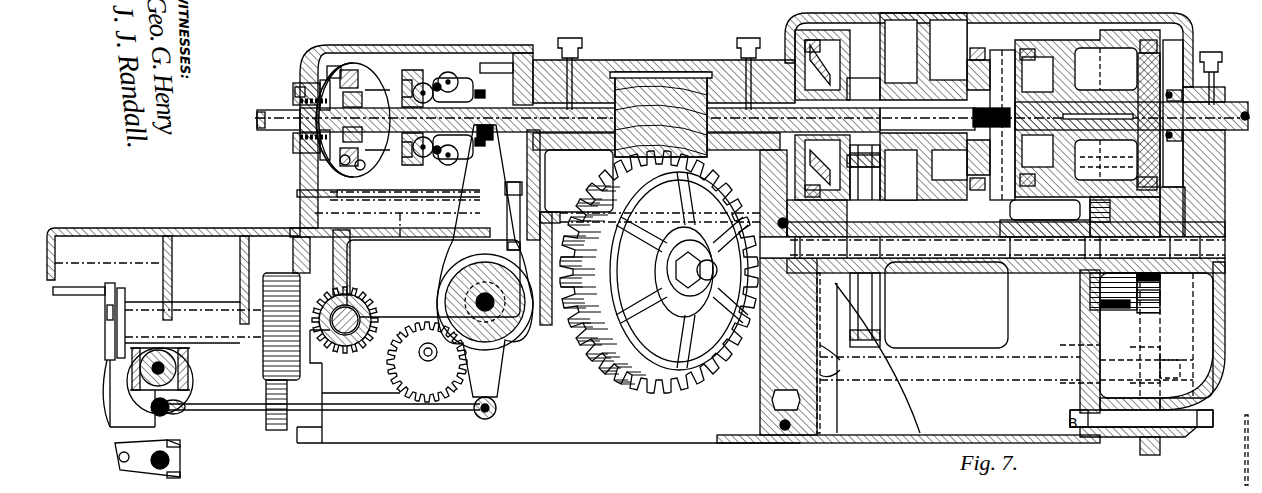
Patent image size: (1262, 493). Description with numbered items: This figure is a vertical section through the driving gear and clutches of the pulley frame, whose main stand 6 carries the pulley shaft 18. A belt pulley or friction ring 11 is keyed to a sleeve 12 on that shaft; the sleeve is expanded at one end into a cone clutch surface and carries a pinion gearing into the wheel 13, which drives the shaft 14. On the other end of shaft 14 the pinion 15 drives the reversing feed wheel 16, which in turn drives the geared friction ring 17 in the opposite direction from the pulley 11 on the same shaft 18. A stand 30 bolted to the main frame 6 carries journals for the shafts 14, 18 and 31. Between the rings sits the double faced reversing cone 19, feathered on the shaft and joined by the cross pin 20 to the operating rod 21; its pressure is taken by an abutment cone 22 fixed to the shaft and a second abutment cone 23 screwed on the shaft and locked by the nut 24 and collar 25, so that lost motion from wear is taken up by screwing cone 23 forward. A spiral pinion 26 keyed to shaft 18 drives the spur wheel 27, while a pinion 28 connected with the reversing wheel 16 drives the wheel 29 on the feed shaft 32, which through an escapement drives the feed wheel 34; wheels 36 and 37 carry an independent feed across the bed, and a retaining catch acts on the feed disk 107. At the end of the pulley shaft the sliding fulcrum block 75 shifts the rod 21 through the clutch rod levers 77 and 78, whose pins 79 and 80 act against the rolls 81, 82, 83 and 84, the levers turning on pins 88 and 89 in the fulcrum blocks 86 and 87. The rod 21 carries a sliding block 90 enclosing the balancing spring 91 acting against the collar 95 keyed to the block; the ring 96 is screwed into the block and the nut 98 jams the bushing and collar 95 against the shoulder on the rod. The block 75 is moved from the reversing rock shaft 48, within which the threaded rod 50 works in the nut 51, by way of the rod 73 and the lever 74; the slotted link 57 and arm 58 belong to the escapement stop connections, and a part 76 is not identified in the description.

The main stand of pulley frame 6 is at (546, 185).
The belt pulley 11 is at (923, 106).
The sleeve 12 is at (863, 122).
The wheel 13 is at (865, 246).
The shaft 14 is at (992, 247).
The pinion 15 is at (1080, 217).
The reversing feed wheel 16 is at (1115, 312).
The geared friction ring 17 is at (1106, 114).
The pulley shaft 18 is at (1132, 116).
The double faced reversing cone 19 is at (1036, 117).
The cross pin 20 is at (991, 113).
The operating rod 21 is at (752, 120).
The abutment cone 22 is at (822, 115).
The abutment cone 23 is at (1148, 115).
The nut 24 is at (1225, 80).
The collar 25 is at (870, 112).
The spiral pinion 26 is at (661, 114).
The spur wheel 27 is at (660, 272).
The pinion 28 is at (1160, 282).
The wheel 29 is at (1160, 297).
The stand 30 is at (1136, 335).
The shaft 31 is at (1175, 368).
The feed shaft 32 is at (948, 347).
The feed wheel 34 is at (262, 325).
The wheel 36 is at (345, 297).
The wheel 37 is at (427, 362).
The reversing rock shaft 48 is at (215, 355).
The rod 50 is at (158, 350).
The nut 51 is at (168, 401).
The slotted link 57 is at (122, 447).
The arm 58 is at (153, 460).
The rod 73 is at (323, 410).
The lever 74 is at (485, 272).
The sliding fulcrum block 75 is at (462, 84).
The boss 76 is at (455, 295).
The clutch rod lever 77 is at (405, 88).
The clutch rod lever 78 is at (405, 149).
The pin 79 is at (437, 83).
The pin 80 is at (437, 154).
The roll 81 is at (449, 72).
The roll 82 is at (422, 83).
The roll 83 is at (450, 165).
The roll 84 is at (423, 157).
The fulcrum block 86 is at (353, 115).
The fulcrum block 87 is at (362, 170).
The pin 88 is at (333, 65).
The pin 89 is at (343, 168).
The sliding block 90 is at (321, 85).
The balancing spring 91 is at (300, 87).
The collar 95 is at (327, 160).
The ring 96 is at (293, 104).
The nut 98 is at (272, 110).
The feed disk 107 is at (112, 337).